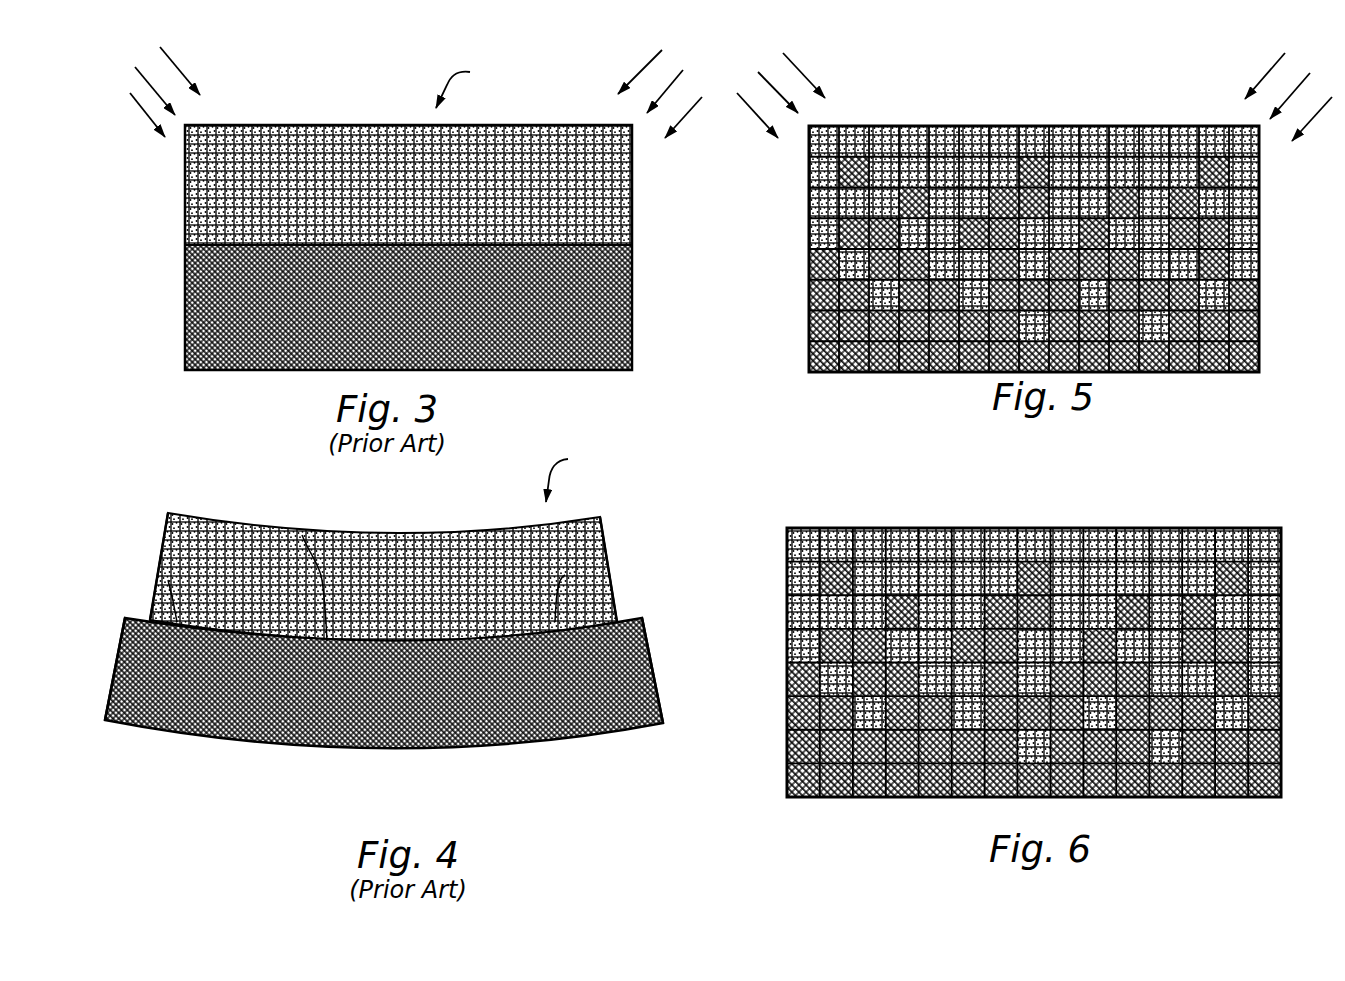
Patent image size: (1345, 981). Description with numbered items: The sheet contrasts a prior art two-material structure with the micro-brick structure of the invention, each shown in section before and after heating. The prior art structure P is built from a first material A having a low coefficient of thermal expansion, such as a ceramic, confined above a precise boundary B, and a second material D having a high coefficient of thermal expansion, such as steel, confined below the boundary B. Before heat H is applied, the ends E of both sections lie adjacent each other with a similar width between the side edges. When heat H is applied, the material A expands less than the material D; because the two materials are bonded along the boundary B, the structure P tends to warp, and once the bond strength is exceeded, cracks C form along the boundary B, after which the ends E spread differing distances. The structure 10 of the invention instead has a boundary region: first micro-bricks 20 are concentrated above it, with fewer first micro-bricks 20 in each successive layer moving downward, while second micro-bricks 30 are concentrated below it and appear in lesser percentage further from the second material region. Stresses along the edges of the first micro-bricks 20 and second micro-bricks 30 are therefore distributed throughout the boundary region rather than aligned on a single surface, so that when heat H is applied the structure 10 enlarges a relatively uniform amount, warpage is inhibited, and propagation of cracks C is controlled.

In FIG. 5, the structure 10 is at (1034, 112).
In FIG. 6, the structure 10 is at (1202, 494).
In FIG. 5, the first micro-bricks 20 is at (1185, 130).
In FIG. 6, the first micro-bricks 20 is at (965, 548).
In FIG. 5, the second micro-bricks 30 is at (850, 175).
In FIG. 6, the second micro-bricks 30 is at (838, 575).
In FIG. 3, the first material A is at (365, 148).
In FIG. 4, the first material A is at (459, 542).
In FIG. 3, the boundary B is at (597, 244).
In FIG. 4, the boundary B is at (302, 535).
In FIG. 4, the cracks C is at (168, 580).
In FIG. 3, the second material D is at (617, 290).
In FIG. 4, the second material D is at (560, 728).
In FIG. 3, the ends E is at (185, 178).
In FIG. 4, the ends E is at (166, 542).
In FIG. 3, the heat H is at (181, 63).
In FIG. 5, the heat H is at (805, 66).
In FIG. 3, the prior art structure P is at (462, 82).
In FIG. 4, the prior art structure P is at (568, 473).